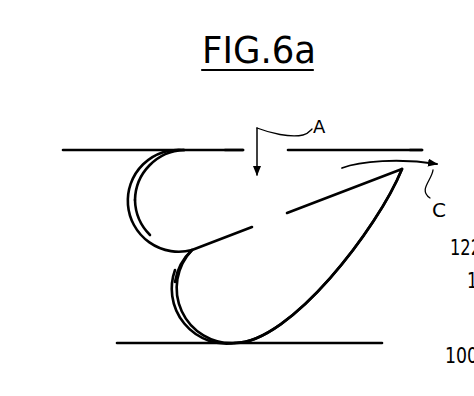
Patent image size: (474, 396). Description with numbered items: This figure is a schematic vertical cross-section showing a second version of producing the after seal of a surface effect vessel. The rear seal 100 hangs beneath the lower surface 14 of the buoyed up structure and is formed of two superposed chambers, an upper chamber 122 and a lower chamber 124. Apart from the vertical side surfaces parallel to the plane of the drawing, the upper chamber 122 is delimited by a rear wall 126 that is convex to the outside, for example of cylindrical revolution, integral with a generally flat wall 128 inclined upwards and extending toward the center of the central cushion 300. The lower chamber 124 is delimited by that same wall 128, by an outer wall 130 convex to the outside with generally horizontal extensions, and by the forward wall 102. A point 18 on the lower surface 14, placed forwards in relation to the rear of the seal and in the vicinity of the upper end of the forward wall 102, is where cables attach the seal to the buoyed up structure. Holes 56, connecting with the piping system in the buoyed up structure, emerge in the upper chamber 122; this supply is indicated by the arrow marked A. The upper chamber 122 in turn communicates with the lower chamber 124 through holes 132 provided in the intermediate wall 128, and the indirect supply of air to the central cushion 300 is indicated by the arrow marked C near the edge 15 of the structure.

The lower surface of the buoyed up structure 14 is at (80, 151).
The holes 56 is at (243, 151).
The point 18 is at (401, 150).
The edge of second plate 15 is at (426, 157).
The rear seal apparatus 100 is at (98, 315).
The forward wall 102 is at (310, 300).
The upper chamber 122 is at (157, 211).
The lower chamber 124 is at (208, 308).
The rear wall 126 is at (135, 188).
The flat wall 128 is at (222, 240).
The outer wall 130 is at (175, 282).
The holes 132 is at (266, 224).
The central buoyancy portion 300 is at (437, 272).